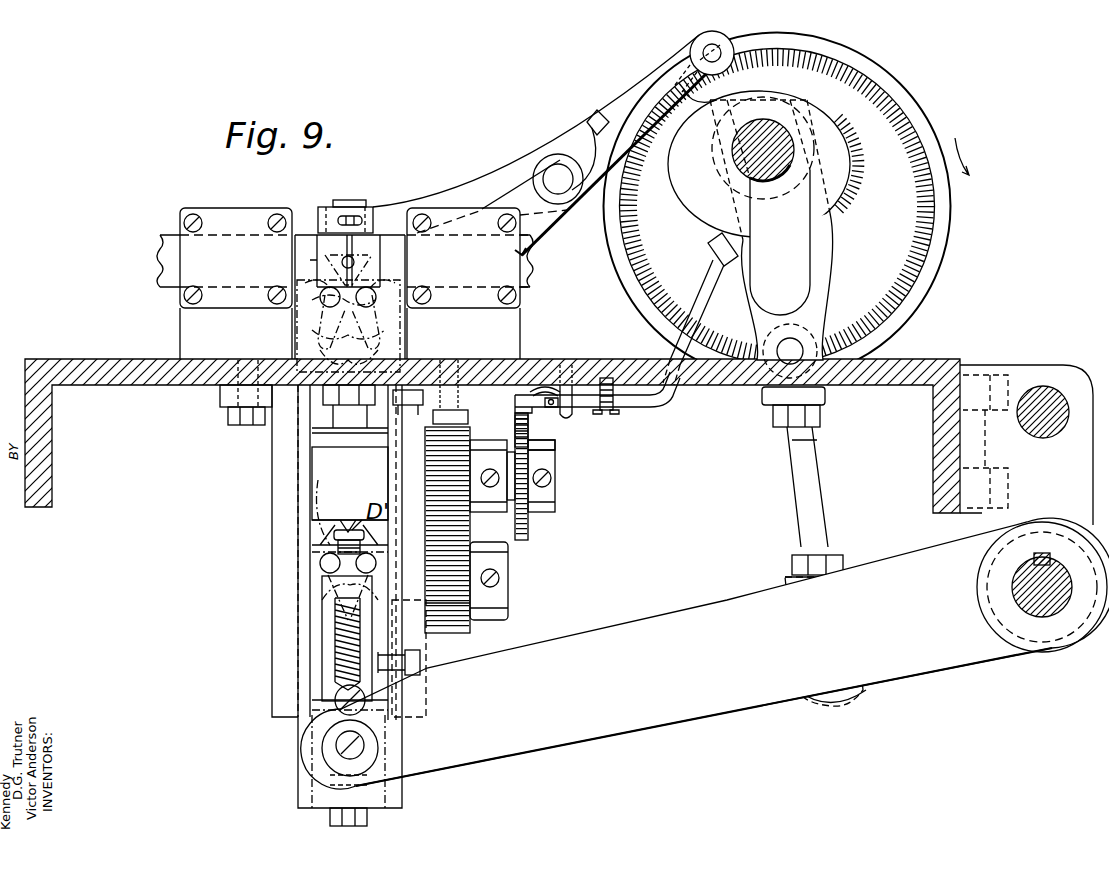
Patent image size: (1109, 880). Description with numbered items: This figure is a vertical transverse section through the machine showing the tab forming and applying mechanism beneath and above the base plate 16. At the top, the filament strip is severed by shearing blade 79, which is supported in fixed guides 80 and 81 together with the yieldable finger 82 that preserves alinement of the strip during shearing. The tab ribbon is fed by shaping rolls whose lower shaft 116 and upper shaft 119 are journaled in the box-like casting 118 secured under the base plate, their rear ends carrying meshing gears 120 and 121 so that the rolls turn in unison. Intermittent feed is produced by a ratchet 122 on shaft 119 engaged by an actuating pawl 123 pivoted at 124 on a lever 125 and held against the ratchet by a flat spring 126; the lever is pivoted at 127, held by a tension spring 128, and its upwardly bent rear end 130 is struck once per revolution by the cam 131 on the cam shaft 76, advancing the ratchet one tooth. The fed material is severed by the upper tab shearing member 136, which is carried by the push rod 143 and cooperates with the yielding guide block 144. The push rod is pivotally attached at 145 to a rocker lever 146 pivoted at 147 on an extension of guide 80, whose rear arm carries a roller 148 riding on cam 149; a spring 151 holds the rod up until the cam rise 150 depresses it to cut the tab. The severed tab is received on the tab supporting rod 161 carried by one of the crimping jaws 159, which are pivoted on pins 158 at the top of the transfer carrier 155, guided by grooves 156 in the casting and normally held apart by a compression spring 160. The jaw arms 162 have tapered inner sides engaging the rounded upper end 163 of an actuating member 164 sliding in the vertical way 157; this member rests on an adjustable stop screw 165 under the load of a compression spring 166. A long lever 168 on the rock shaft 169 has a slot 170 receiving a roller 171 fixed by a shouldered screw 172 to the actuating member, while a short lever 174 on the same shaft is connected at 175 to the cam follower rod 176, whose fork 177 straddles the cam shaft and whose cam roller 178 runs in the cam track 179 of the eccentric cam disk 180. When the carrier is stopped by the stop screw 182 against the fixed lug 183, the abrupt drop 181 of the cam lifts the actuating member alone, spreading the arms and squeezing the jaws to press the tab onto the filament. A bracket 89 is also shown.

The base plate 16 is at (153, 359).
The cam shaft 76 is at (745, 134).
The shearing blade 79 is at (305, 236).
The fixed guide 80 is at (449, 210).
The fixed guide 81 is at (248, 208).
The yieldable bar or finger 82 is at (360, 261).
The bracket 89 is at (1048, 386).
The shaft 116 is at (510, 570).
The box-like casting 118 is at (268, 439).
The shaft 119 is at (556, 476).
The gear 120 is at (468, 632).
The gear 121 is at (452, 492).
The ratchet 122 is at (529, 532).
The actuating pawl 123 is at (515, 402).
The pivot 124 is at (556, 408).
The lever 125 is at (646, 407).
The flat spring 126 is at (556, 392).
The pivot 127 is at (614, 412).
The tension spring 128 is at (570, 416).
The rear end of lever 130 is at (690, 322).
The cam 131 is at (712, 252).
The upper tab shearing member 136 is at (318, 440).
The push rod 143 is at (340, 204).
The yielding guide block 144 is at (352, 452).
The pivotal attachment 145 is at (352, 218).
The rocker lever 146 is at (505, 172).
The pivot 147 is at (552, 160).
The roller 148 is at (690, 50).
The cam 149 is at (830, 108).
The cam rise 150 is at (720, 88).
The spring 151 is at (590, 116).
The transfer carrier or block 155 is at (400, 348).
The grooves 156 is at (302, 580).
The vertical way or opening 157 is at (322, 780).
The pins 158 is at (320, 564).
The crimping jaws or squeezers 159 is at (325, 265).
The compression spring 160 is at (322, 556).
The tab supporting rod 161 is at (345, 522).
The arms 162 is at (330, 620).
The rounded upper end 163 is at (322, 318).
The actuating member 164 is at (325, 680).
The adjustable stop screw 165 is at (368, 820).
The compression spring 166 is at (340, 646).
The long lever 168 is at (705, 653).
The rock shaft 169 is at (1045, 614).
The slot 170 is at (393, 736).
The roller 171 is at (366, 748).
The shouldered screw 172 is at (340, 748).
The short lever 174 is at (866, 692).
The pivotal connection 175 is at (822, 696).
The cam follower rod 176 is at (814, 476).
The fork 177 is at (818, 236).
The cam roller 178 is at (817, 352).
The cam track 179 is at (922, 290).
The cam disk 180 is at (949, 244).
The abrupt drop 181 is at (760, 54).
The stop screw 182 is at (420, 662).
The fixed lug 183 is at (408, 406).